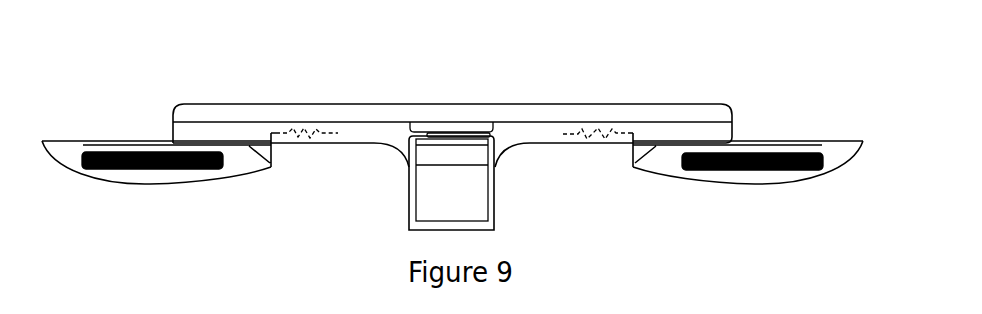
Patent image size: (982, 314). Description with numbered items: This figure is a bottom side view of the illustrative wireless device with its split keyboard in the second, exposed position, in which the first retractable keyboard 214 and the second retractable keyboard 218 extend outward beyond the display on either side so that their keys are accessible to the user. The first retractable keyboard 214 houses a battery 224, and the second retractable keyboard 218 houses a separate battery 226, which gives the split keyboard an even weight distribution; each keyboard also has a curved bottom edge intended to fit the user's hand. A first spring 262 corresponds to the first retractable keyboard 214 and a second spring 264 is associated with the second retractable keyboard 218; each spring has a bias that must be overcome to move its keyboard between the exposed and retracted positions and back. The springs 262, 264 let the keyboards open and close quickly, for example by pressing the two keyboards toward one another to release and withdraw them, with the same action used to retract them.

The first retractable keyboard 214 is at (69, 150).
The second retractable keyboard 218 is at (842, 150).
The battery 224 is at (155, 170).
The battery 226 is at (747, 173).
The first spring 262 is at (311, 133).
The second spring 264 is at (605, 135).